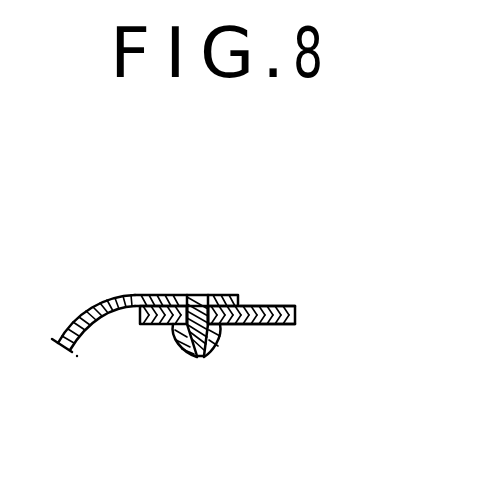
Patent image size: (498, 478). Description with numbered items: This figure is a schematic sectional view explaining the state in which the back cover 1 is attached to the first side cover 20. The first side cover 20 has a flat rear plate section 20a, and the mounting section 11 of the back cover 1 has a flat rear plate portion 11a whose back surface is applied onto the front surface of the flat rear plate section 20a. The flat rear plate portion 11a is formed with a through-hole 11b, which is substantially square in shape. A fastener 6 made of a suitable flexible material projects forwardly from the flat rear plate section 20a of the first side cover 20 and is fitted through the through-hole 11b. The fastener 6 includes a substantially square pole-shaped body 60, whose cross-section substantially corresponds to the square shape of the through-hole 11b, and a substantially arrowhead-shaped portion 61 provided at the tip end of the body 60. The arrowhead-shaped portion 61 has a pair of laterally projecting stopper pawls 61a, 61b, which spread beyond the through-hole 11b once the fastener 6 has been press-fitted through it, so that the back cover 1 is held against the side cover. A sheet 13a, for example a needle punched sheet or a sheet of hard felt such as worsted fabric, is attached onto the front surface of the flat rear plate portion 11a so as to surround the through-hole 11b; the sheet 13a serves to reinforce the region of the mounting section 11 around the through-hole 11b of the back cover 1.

The back cover 1 is at (265, 300).
The mounting section 11 is at (263, 303).
The flat rear plate portion 11a is at (283, 304).
The through-hole 11b is at (199, 293).
The sheet 13a is at (280, 325).
The first side cover 20 is at (145, 261).
The flat rear plate section 20a is at (162, 293).
The fastener 6 is at (204, 322).
The substantially square pole-shaped body 60 is at (208, 294).
The substantially arrowhead-shaped portion 61 is at (204, 386).
The stopper pawl 61a is at (178, 348).
The stopper pawl 61b is at (213, 345).